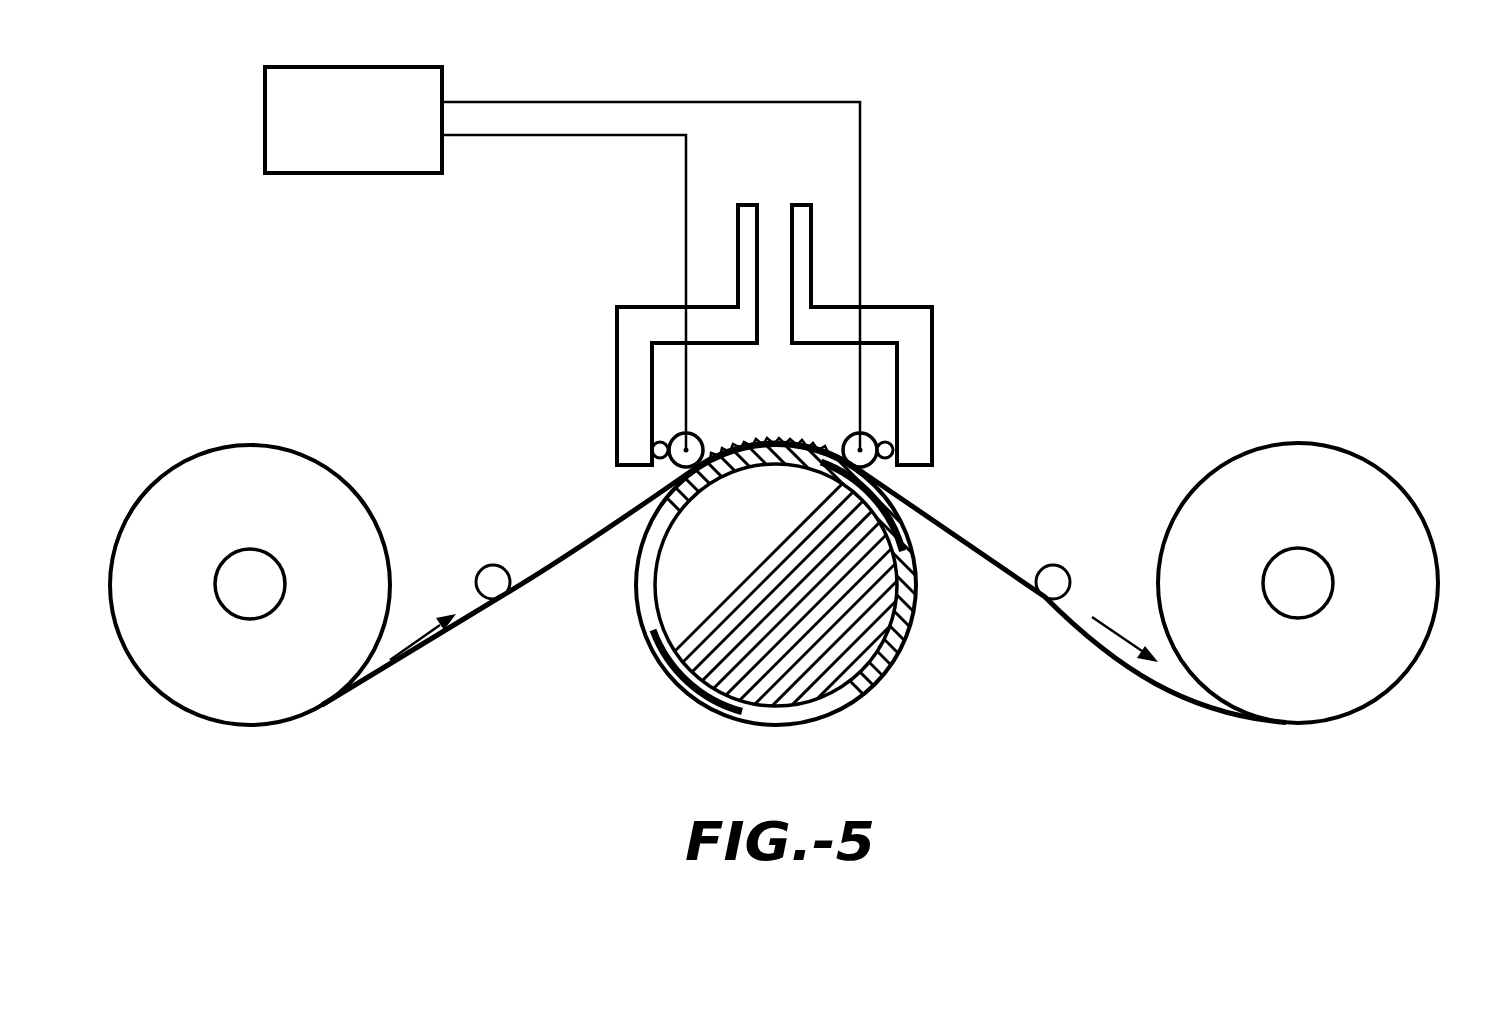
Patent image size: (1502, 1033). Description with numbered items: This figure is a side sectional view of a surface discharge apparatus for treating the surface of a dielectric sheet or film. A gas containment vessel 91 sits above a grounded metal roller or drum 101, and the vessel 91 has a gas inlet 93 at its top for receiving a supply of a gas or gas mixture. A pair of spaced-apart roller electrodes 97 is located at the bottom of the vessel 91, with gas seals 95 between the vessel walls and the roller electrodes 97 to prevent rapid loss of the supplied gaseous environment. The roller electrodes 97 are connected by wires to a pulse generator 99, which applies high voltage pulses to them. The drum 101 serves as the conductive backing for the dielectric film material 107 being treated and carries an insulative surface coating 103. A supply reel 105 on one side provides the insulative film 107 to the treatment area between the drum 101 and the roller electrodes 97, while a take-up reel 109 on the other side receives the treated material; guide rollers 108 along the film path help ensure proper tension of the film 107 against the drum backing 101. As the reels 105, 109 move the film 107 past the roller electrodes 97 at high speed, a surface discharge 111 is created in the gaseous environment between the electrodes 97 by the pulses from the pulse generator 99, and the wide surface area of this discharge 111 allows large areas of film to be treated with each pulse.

The pulse generator 99 is at (352, 158).
The gas inlet 93 is at (774, 204).
The gas containment vessel 91 is at (811, 396).
The gas seals 95 is at (653, 445).
The roller electrodes 97 is at (872, 443).
The surface discharge 111 is at (752, 440).
The grounded metal roller or drum 101 is at (690, 602).
The insulative surface coating 103 is at (895, 658).
The supply reel 105 is at (233, 687).
The dielectric film material 107 is at (450, 643).
The guide rollers 108 is at (493, 582).
The take-up reel 109 is at (1308, 688).